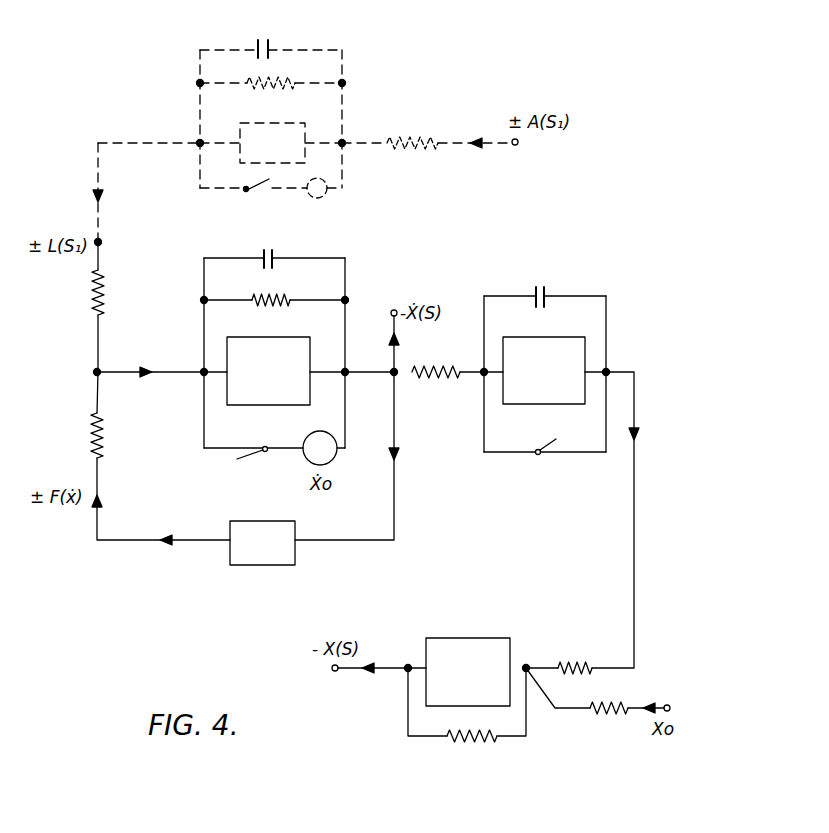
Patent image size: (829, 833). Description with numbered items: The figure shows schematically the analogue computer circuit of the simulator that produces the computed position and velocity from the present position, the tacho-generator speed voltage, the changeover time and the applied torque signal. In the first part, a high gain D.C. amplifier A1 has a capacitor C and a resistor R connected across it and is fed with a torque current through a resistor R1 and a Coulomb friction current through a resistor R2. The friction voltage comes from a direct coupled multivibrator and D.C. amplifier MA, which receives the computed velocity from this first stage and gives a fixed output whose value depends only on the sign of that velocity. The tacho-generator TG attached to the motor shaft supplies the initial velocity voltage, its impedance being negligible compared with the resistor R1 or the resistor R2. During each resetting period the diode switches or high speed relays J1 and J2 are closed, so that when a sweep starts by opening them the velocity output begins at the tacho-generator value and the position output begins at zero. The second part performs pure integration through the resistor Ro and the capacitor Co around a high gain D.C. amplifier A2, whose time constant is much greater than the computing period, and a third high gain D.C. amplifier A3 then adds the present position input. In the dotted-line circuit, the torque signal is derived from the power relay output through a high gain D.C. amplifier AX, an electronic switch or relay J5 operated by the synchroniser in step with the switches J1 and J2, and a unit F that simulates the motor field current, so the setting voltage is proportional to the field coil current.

The high gain D.C. amplifier AX is at (272, 143).
The electronic switch or relay J5 is at (255, 197).
The motor field current simulating unit F is at (317, 188).
The resistor R1 is at (112, 292).
The resistor R2 is at (113, 435).
The high gain D.C. amplifier A1 is at (268, 371).
The capacitor C is at (278, 251).
The resistor R is at (271, 311).
The diode switch or high speed relay J1 is at (251, 442).
The tacho-generator TG is at (320, 448).
The direct coupled multivibrator and D.C. amplifier MA is at (262, 543).
The resistor Ro is at (436, 387).
The capacitor Co is at (543, 284).
The high gain D.C. amplifier A2 is at (544, 370).
The diode switch or high speed relay J2 is at (541, 460).
The high gain D.C. amplifier A3 is at (468, 672).